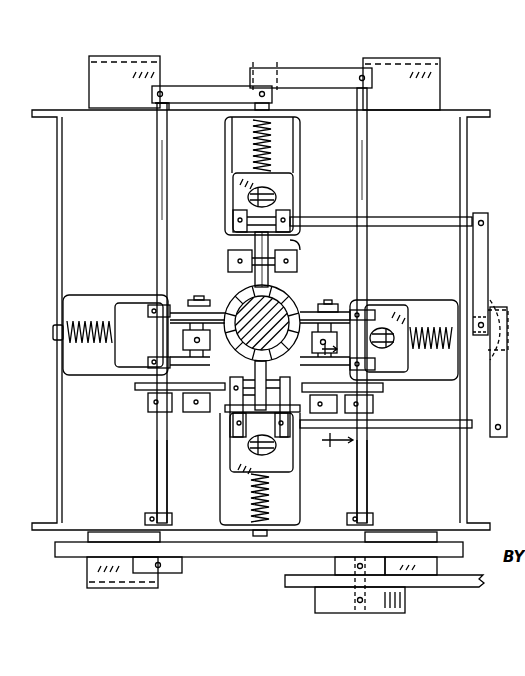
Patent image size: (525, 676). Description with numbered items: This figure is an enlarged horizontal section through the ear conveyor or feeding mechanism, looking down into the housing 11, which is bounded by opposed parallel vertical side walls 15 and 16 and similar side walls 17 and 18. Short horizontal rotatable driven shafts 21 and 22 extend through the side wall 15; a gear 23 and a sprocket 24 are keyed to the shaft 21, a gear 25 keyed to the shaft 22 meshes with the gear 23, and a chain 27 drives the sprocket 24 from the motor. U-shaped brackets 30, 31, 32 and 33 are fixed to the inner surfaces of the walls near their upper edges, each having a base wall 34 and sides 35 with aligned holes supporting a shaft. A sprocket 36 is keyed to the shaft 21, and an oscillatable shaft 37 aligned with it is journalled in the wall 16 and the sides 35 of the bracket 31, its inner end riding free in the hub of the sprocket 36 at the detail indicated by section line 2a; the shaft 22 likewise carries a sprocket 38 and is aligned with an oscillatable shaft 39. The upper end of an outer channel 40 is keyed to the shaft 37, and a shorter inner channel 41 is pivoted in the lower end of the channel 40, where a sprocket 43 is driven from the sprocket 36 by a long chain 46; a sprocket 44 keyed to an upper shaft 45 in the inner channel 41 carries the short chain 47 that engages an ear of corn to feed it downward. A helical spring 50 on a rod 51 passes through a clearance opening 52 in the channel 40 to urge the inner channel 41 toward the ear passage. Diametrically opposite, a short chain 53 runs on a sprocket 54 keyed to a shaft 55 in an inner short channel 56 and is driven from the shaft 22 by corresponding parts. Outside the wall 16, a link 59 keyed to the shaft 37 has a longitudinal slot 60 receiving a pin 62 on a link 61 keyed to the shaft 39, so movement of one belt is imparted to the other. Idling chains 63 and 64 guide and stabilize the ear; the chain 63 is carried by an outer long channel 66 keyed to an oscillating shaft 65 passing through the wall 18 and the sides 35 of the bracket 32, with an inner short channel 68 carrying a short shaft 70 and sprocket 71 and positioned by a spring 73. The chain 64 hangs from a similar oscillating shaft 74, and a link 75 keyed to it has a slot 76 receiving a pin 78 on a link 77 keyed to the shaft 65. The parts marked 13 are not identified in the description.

The housing 11 is at (260, 316).
The mounting block 13 is at (89, 76).
The side wall 15 is at (80, 528).
The side wall 16 is at (193, 119).
The side wall 17 is at (57, 165).
The side wall 18 is at (460, 138).
The rotatable driven shaft 21 is at (357, 492).
The rotatable driven shaft 22 is at (157, 461).
The gear 23 is at (283, 557).
The sprocket 24 is at (318, 590).
The gear 25 is at (68, 557).
The chain 27 is at (468, 587).
The section line arrow 2a is at (340, 396).
The U-shaped bracket 30 is at (218, 486).
The U-shaped bracket 31 is at (455, 302).
The U-shaped bracket 32 is at (260, 321).
The U-shaped bracket 33 is at (70, 294).
The base wall 34 is at (298, 128).
The sides 35 is at (225, 152).
The sprocket 36 is at (373, 402).
The oscillatable shaft 37 is at (367, 137).
The sprocket 38 is at (143, 391).
The oscillatable shaft 39 is at (157, 163).
The outer channel 40 is at (415, 288).
The inner channel 41 is at (315, 374).
The sprocket 43 is at (335, 360).
The sprocket 44 is at (328, 300).
The upper shaft 45 is at (345, 292).
The long chain 46 is at (383, 390).
The short chain 47 is at (298, 357).
The helical spring 50 is at (448, 326).
The rod 51 is at (418, 346).
The clearance opening 52 is at (392, 346).
The short conveyor chain 53 is at (224, 306).
The sprocket 54 is at (203, 344).
The shaft 55 is at (198, 297).
The inner short channel 56 is at (255, 372).
The link 59 is at (314, 70).
The longitudinal slot 60 is at (272, 88).
The link 61 is at (181, 88).
The pin 62 is at (252, 72).
The short chain 63 is at (233, 238).
The short chain 64 is at (230, 410).
The oscillating shaft 65 is at (414, 219).
The outer long channel 66 is at (233, 172).
The inner short channel 68 is at (297, 244).
The short shaft 70 is at (296, 266).
The sprocket 71 is at (270, 276).
The spring 73 is at (253, 150).
The oscillating shaft 74 is at (444, 432).
The link 75 is at (496, 398).
The longitudinal slot 76 is at (495, 348).
The link 77 is at (484, 242).
The pin 78 is at (496, 310).